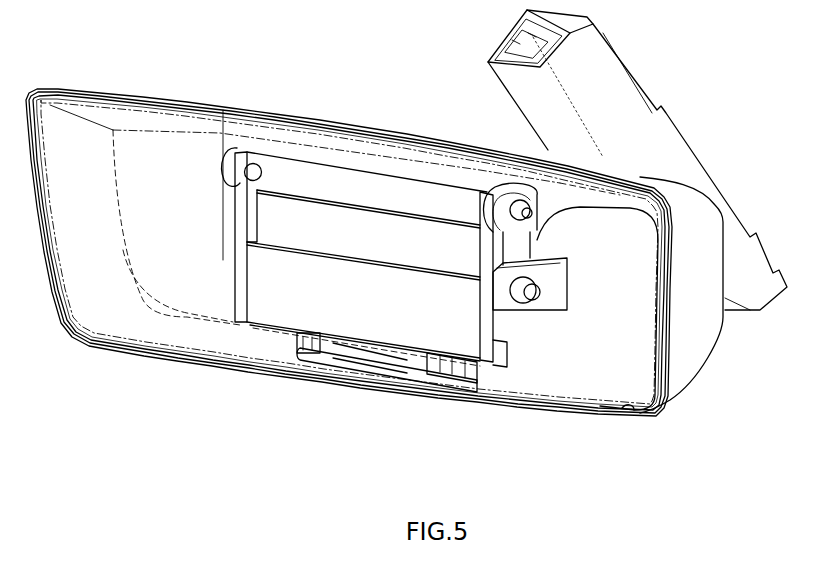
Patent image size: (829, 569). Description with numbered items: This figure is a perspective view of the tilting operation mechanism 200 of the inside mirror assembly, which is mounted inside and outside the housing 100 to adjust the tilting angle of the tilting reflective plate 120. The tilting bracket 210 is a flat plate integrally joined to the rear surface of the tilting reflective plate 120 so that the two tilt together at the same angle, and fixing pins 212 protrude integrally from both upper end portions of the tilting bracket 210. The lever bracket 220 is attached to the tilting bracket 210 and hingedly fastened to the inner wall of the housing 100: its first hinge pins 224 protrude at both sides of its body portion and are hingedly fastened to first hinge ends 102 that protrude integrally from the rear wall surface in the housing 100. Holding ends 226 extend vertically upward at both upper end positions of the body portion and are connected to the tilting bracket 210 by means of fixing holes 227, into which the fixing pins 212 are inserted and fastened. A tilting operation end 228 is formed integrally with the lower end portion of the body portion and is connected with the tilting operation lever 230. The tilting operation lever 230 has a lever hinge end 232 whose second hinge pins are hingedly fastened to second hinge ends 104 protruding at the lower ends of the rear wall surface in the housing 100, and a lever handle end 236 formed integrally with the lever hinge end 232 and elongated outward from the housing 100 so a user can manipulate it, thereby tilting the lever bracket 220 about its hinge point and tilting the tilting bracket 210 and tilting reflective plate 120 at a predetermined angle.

The housing 100 is at (692, 355).
The first hinge ends 102 is at (557, 302).
The second hinge ends 104 is at (493, 363).
The tilting reflective plate 120 is at (630, 412).
The tilting operation mechanism 200 is at (249, 321).
The tilting bracket 210 is at (235, 282).
The fixing pins 212 is at (537, 187).
The lever bracket 220 is at (443, 384).
The first hinge pins 224 is at (531, 294).
The holding ends 226 is at (532, 242).
The fixing holes 227 is at (482, 193).
The tilting operation end 228 is at (420, 378).
The tilting operation lever 230 is at (373, 376).
The lever hinge end 232 is at (338, 345).
The lever handle end 236 is at (362, 368).